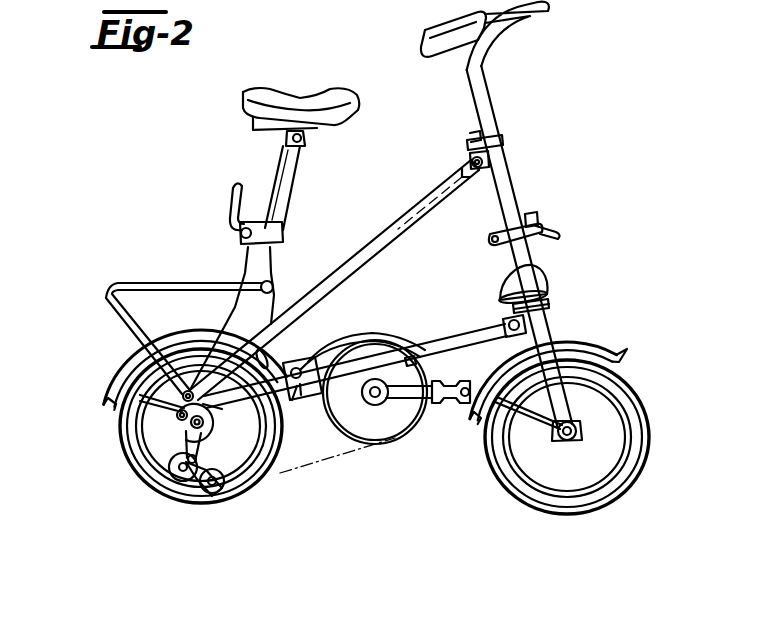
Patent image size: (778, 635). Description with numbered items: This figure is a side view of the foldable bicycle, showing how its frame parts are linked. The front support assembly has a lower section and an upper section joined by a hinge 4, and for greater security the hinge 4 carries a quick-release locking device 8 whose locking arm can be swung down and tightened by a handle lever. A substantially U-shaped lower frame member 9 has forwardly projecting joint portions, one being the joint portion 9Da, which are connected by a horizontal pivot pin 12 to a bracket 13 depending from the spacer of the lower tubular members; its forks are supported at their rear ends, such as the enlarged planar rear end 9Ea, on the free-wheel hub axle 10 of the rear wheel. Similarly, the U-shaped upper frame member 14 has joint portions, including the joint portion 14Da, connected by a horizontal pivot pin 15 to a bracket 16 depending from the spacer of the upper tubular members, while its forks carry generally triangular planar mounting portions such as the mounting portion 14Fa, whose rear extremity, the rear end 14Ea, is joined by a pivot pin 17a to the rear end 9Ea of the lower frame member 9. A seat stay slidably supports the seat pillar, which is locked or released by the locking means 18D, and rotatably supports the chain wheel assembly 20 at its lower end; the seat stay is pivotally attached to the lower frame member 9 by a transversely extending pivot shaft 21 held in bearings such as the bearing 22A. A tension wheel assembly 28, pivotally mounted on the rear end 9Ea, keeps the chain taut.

The hinge 4 is at (478, 248).
The locking device 8 is at (545, 212).
The lower frame member 9 is at (440, 340).
The joint portion 9Da is at (507, 340).
The rear end 9Ea is at (182, 417).
The free-wheel hub axle 10 is at (197, 422).
The horizontal pivot pin 12 is at (505, 326).
The bracket 13 is at (550, 304).
The upper frame member 14 is at (374, 240).
The joint portion 14Da is at (463, 178).
The rear end 14Ea is at (183, 394).
The planar mounting portion 14Fa is at (250, 328).
The horizontal pivot pin 15 is at (470, 162).
The bracket 16 is at (490, 147).
The pivot pin 17a is at (190, 402).
The locking means 18D is at (212, 205).
The chain wheel assembly 20 is at (400, 442).
The pivot shaft 21 is at (296, 397).
The bearing 22A is at (300, 380).
The tension wheel assembly 28 is at (190, 497).